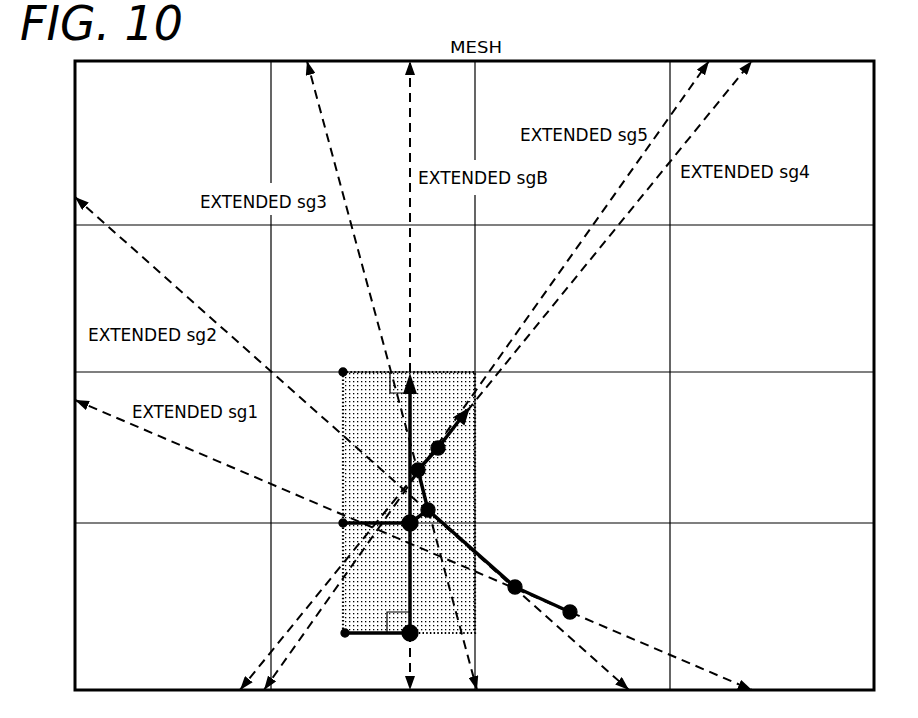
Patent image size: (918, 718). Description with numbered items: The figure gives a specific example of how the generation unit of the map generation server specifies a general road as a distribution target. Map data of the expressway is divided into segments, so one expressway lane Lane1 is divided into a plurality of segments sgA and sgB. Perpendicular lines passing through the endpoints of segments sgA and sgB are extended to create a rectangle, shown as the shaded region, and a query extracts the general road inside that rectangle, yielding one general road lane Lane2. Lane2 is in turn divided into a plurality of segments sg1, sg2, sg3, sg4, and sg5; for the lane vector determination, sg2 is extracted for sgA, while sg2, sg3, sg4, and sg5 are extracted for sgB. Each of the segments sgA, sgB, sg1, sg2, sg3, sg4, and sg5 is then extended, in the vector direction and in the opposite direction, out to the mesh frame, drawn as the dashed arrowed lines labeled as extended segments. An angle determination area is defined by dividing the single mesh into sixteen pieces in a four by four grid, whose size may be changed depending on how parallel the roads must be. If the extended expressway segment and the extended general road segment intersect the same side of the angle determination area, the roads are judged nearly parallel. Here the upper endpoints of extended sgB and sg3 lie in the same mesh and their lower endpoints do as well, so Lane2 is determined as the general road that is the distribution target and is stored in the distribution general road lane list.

The expressway lane segment sgA is at (405, 555).
The expressway lane segment sgB is at (405, 458).
The general road lane segment sg1 is at (543, 597).
The general road lane segment sg2 is at (482, 556).
The general road lane segment sg3 is at (433, 497).
The general road lane segment sg4 is at (426, 460).
The general road lane segment sg5 is at (457, 430).
The expressway lane Lane1 is at (379, 596).
The general road lane Lane2 is at (603, 608).